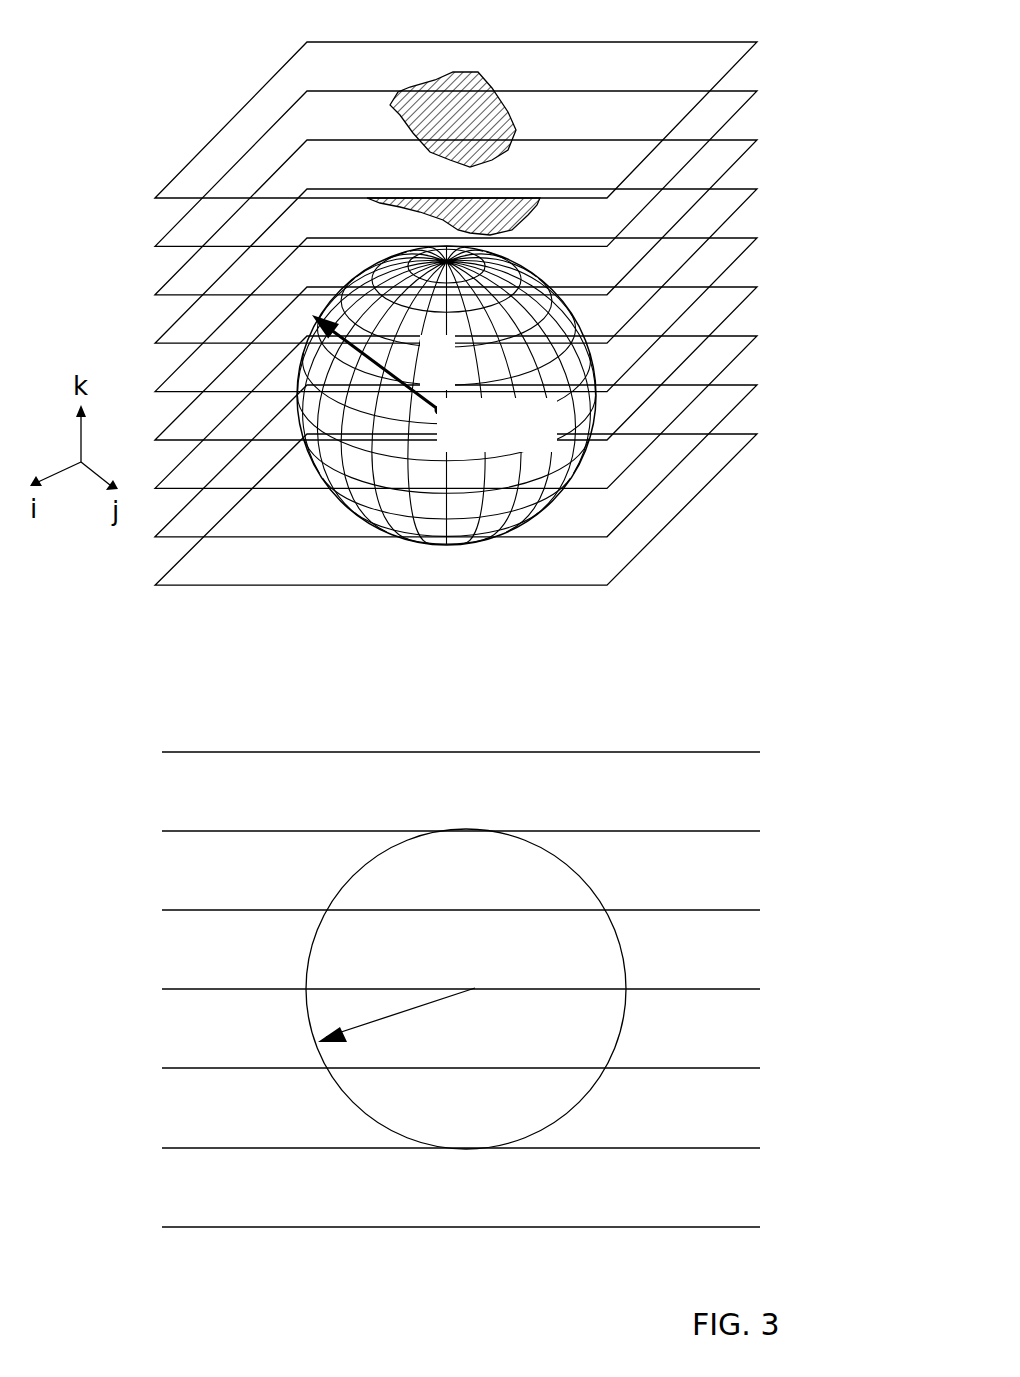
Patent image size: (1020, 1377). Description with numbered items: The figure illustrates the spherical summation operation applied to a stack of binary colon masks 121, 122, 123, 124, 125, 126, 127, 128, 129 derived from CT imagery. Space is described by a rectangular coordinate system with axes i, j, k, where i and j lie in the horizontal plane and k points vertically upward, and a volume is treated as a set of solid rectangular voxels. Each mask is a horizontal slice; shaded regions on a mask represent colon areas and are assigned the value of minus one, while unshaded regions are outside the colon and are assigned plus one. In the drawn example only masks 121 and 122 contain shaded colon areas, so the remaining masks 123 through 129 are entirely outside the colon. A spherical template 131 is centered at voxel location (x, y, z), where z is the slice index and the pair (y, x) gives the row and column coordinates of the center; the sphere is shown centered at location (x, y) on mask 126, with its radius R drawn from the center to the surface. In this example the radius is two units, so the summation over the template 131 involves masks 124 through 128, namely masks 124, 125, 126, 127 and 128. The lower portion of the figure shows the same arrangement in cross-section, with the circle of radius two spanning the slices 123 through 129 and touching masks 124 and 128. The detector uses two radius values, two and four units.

The binary colon mask 121 is at (690, 67).
The binary colon mask 122 is at (690, 122).
The binary colon mask 123 is at (690, 178).
The binary colon mask 124 is at (690, 223).
The binary colon mask 125 is at (690, 275).
The binary colon mask 126 is at (690, 323).
The binary colon mask 127 is at (690, 380).
The binary colon mask 128 is at (690, 428).
The binary colon mask 129 is at (690, 492).
The spherical template 131 is at (342, 868).